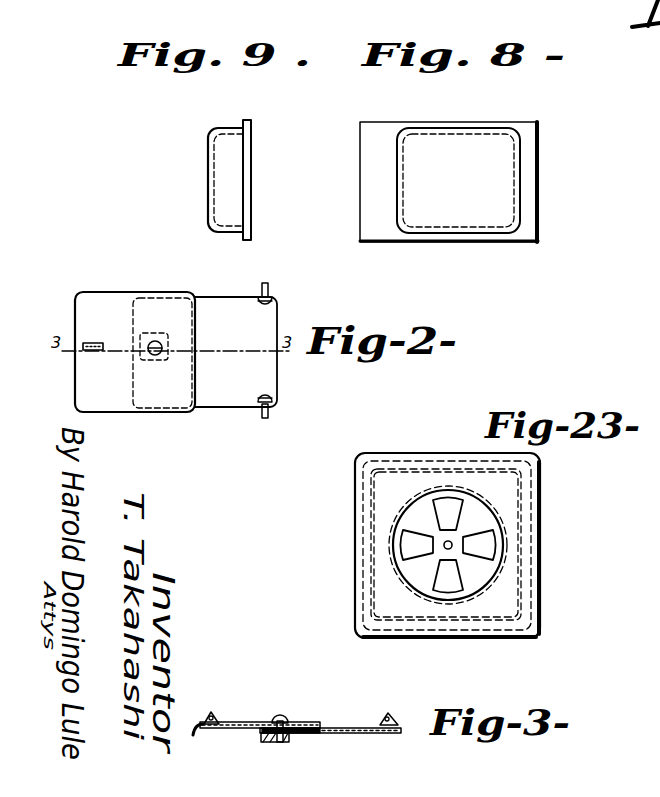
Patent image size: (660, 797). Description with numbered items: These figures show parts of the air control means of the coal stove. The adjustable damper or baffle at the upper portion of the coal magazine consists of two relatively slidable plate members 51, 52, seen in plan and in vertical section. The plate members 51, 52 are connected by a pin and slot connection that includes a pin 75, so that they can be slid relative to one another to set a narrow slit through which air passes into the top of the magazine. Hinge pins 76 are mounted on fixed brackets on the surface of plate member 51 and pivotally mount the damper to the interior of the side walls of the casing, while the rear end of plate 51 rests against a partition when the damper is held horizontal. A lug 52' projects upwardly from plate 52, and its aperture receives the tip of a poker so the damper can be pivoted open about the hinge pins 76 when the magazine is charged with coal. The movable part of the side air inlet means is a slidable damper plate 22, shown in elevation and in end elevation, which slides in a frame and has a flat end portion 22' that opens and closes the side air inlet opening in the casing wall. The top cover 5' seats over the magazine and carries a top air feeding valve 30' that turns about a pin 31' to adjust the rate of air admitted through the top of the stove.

In FIG. 9, the slidable damper plate 22 is at (214, 180).
In FIG. 8, the slidable damper plate 22 is at (466, 182).
In FIG. 8, the flat end portion 22' is at (417, 180).
In FIG. 2, the plate member 52 is at (135, 336).
In FIG. 3, the plate member 52 is at (256, 710).
In FIG. 2, the lug 52' is at (97, 367).
In FIG. 3, the lug 52' is at (212, 701).
In FIG. 2, the plate member 51 is at (218, 306).
In FIG. 3, the plate member 51 is at (341, 726).
In FIG. 2, the pin 75 is at (157, 343).
In FIG. 3, the pin 75 is at (284, 720).
In FIG. 2, the hinge pins 76 is at (278, 300).
In FIG. 3, the hinge pins 76 is at (389, 713).
In FIG. 23, the top cover 5' is at (462, 545).
In FIG. 23, the top air feeding valve 30' is at (479, 545).
In FIG. 23, the pin 31' is at (464, 533).